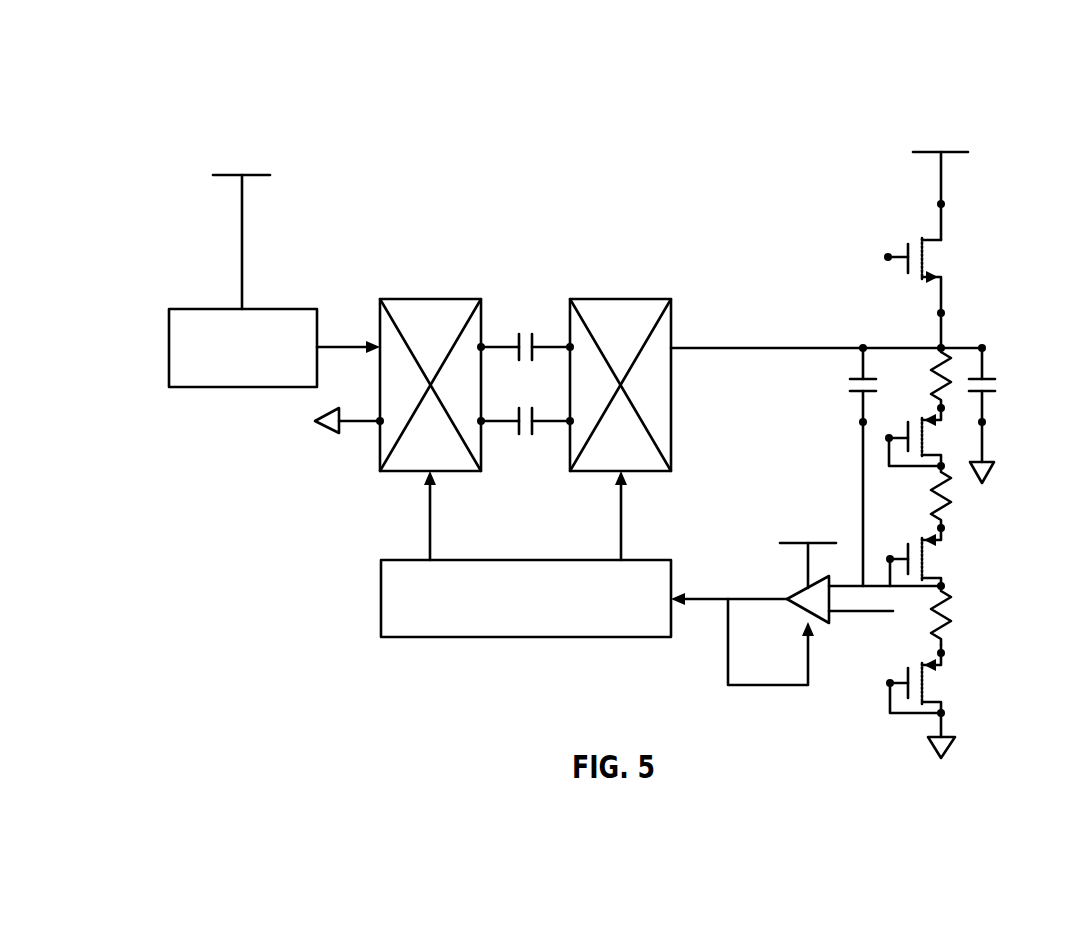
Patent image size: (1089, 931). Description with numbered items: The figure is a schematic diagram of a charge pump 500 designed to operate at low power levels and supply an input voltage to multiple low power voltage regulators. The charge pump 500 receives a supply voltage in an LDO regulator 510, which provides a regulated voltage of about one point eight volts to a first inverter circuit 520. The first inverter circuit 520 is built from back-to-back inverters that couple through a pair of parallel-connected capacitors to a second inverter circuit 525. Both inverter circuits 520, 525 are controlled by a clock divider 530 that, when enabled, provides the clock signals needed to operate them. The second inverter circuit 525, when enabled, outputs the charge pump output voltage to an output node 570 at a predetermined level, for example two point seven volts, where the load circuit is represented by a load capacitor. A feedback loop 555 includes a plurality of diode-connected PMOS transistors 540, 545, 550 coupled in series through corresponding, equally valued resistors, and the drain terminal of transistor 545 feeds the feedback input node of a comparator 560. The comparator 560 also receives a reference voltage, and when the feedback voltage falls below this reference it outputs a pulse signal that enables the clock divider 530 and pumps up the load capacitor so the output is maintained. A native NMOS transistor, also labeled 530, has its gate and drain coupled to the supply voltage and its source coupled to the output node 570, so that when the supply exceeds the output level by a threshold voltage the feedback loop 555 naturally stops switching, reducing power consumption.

The charge pump 500 is at (208, 66).
The LDO regulator 510 is at (243, 388).
The first inverter circuit 520 is at (430, 299).
The second inverter circuit 525 is at (620, 299).
The clock divider 530 is at (450, 640).
The diode-connected transistor 540 is at (925, 690).
The diode-connected transistor 545 is at (925, 565).
The diode-connected transistor 550 is at (936, 421).
The feedback loop 555 is at (770, 471).
The comparator 560 is at (830, 624).
The output node 570 is at (946, 346).